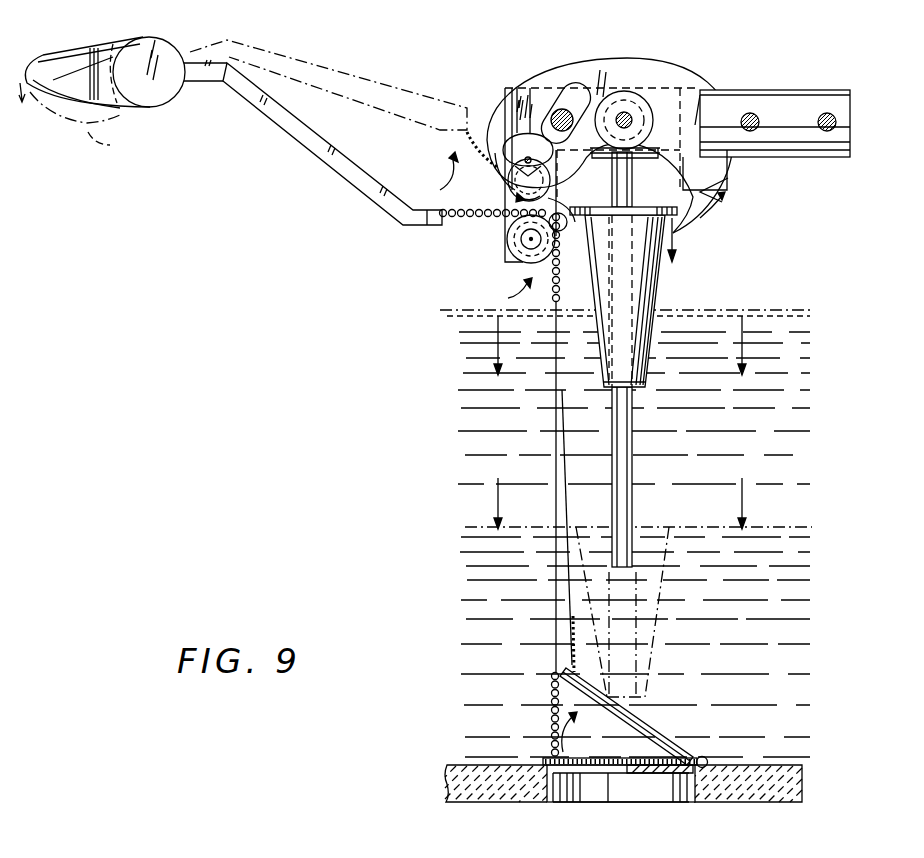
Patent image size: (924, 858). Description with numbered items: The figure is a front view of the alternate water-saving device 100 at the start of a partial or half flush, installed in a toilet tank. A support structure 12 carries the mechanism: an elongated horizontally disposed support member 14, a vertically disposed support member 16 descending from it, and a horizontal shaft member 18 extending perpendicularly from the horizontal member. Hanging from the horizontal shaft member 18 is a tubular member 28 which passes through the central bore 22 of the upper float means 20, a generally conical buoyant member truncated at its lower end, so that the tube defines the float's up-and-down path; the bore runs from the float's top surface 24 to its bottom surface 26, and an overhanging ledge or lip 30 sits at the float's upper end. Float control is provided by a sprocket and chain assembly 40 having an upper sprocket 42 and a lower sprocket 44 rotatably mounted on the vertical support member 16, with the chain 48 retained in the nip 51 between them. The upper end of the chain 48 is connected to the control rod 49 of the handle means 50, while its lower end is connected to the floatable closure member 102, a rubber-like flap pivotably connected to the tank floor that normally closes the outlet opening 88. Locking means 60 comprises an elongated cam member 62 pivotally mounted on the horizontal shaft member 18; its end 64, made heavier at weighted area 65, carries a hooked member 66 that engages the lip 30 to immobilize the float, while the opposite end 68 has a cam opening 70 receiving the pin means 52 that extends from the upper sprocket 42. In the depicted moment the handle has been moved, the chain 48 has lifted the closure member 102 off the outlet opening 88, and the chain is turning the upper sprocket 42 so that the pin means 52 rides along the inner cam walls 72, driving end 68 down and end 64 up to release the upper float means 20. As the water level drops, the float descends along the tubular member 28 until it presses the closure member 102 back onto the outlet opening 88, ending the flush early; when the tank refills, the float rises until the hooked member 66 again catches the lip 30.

The support structure 12 is at (760, 60).
The horizontally disposed support member 14 is at (795, 98).
The vertically disposed support member 16 is at (505, 256).
The horizontal shaft member 18 is at (638, 110).
The upper float means 20 is at (652, 291).
The central bore 22 is at (608, 298).
The top surface 24 is at (663, 212).
The bottom surface 26 is at (605, 390).
The tubular member 28 is at (633, 474).
The overhanging ledge or lip 30 is at (598, 213).
The sprocket and chain assembly 40 is at (507, 292).
The upper sprocket 42 is at (567, 229).
The lower sprocket 44 is at (525, 268).
The chain 48 is at (462, 209).
The control rod 49 is at (305, 147).
The handle means 50 is at (126, 108).
The nip 51 is at (559, 262).
The cam linking means or pin means 52 is at (505, 176).
The locking means 60 is at (619, 50).
The elongated cam member 62 is at (655, 62).
The end of cam member 64 is at (705, 200).
The weighted area 65 is at (722, 175).
The hooked member 66 is at (684, 205).
The end of cam member 68 is at (495, 125).
The cam opening 70 is at (520, 130).
The inner cam walls 72 is at (552, 98).
The outlet opening 88 is at (662, 797).
The water-saving device 100 is at (414, 329).
The floatable closure member or flap 102 is at (628, 768).